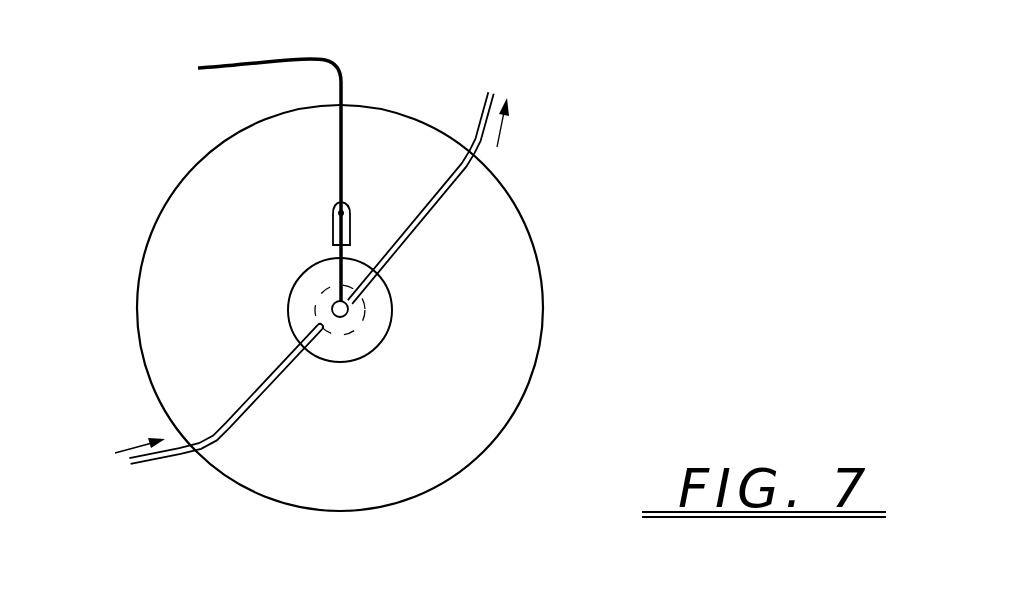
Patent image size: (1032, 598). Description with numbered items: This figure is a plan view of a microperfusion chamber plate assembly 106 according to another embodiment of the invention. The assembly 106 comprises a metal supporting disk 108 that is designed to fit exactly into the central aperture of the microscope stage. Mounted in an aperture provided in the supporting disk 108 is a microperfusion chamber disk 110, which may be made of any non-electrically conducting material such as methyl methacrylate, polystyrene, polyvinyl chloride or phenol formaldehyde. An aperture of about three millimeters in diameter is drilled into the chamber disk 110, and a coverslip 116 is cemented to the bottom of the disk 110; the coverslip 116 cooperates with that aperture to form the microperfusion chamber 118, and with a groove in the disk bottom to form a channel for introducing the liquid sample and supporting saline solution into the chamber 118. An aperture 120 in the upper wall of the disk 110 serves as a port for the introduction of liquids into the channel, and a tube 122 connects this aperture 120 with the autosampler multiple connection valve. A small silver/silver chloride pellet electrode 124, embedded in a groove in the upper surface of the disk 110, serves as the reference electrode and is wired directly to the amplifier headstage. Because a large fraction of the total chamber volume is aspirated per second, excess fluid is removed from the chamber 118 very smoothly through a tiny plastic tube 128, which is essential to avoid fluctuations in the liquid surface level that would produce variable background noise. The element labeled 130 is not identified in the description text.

The microperfusion chamber assembly 106 is at (562, 149).
The metal supporting disk 108 is at (533, 220).
The microperfusion chamber disk 110 is at (386, 342).
The coverslip 116 is at (366, 315).
The microperfusion chamber 118 is at (337, 336).
The aperture 120 is at (300, 322).
The tube 122 is at (278, 398).
The silver/silver chloride pellet electrode 124 is at (345, 268).
The plastic tube 128 is at (484, 118).
The supply tube 130 is at (266, 60).